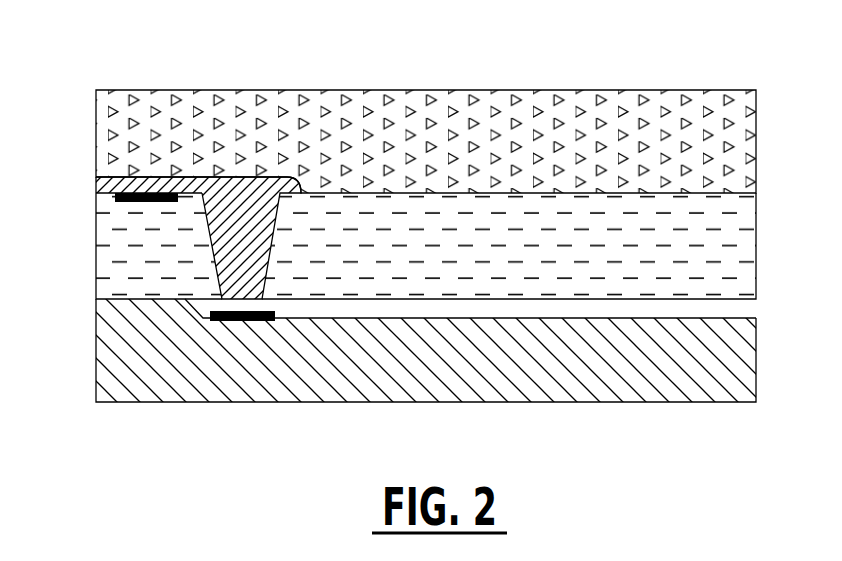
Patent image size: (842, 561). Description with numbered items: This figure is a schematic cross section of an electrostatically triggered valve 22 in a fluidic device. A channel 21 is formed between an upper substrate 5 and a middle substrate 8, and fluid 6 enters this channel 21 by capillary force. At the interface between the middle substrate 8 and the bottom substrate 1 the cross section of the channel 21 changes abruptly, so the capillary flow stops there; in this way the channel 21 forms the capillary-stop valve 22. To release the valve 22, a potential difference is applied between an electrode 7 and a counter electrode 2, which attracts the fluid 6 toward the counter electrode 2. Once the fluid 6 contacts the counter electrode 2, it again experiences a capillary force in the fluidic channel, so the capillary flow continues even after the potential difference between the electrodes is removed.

The bottom substrate 1 is at (728, 373).
The counter electrode 2 is at (237, 322).
The upper substrate 5 is at (722, 138).
The fluid 6 is at (253, 190).
The electrode 7 is at (138, 203).
The middle substrate 8 is at (740, 245).
The channel 21 is at (175, 177).
The electrostatically triggered valve 22 is at (222, 299).